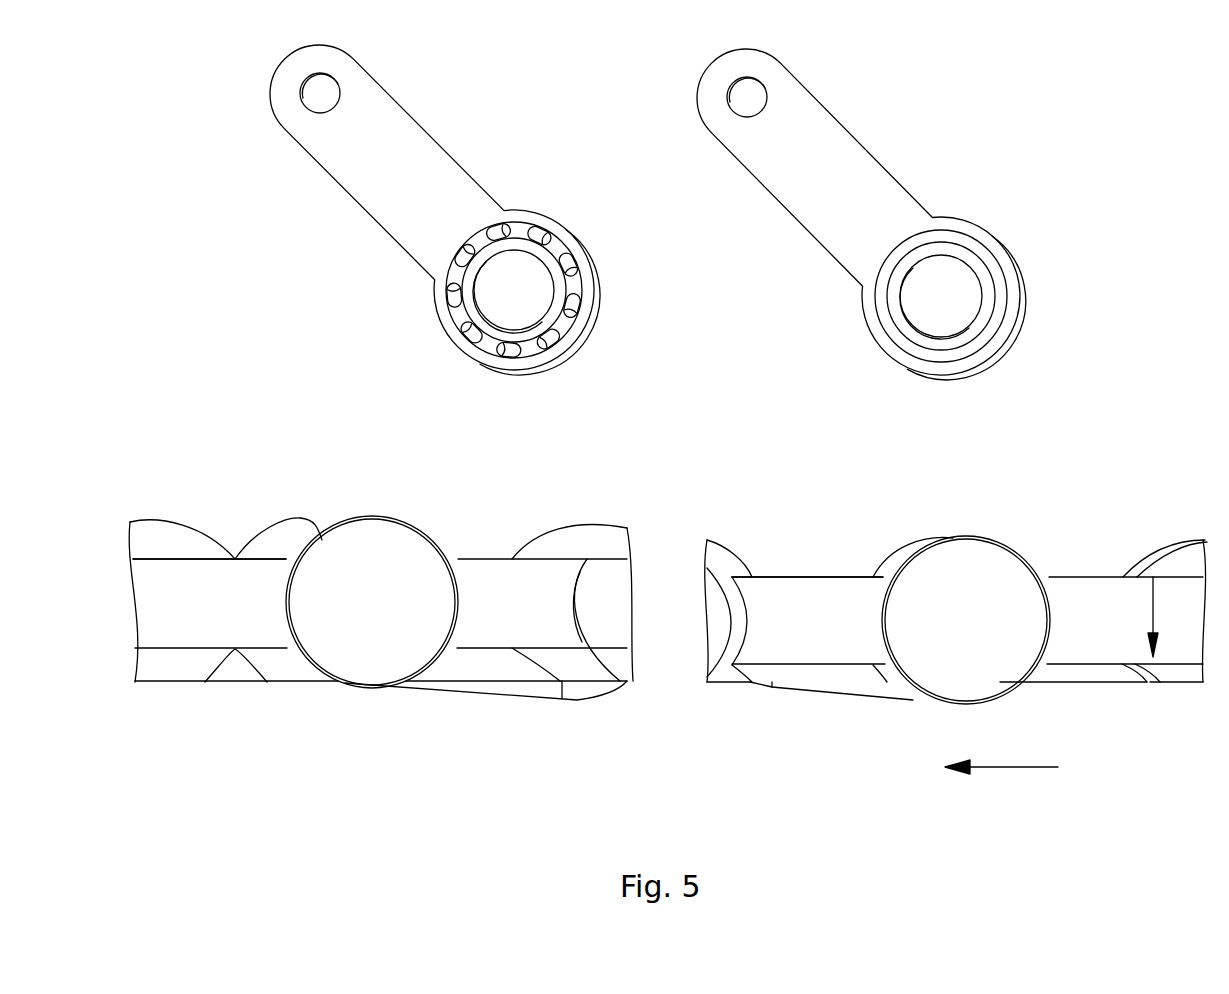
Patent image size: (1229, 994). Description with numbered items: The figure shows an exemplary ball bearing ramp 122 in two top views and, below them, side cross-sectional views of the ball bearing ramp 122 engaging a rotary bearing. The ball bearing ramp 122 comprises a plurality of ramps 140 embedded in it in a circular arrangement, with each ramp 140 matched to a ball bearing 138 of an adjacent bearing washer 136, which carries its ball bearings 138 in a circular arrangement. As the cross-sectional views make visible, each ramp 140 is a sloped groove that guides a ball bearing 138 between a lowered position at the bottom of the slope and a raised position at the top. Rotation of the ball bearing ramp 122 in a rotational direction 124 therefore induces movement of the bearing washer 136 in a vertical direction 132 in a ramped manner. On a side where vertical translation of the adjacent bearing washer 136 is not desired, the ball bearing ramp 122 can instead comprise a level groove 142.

The ball bearing ramp 122 is at (382, 166).
The rotational direction 124 is at (1000, 767).
The vertical direction 132 is at (1153, 605).
The bearing washer 136 is at (218, 585).
The ball bearing 138 is at (370, 607).
The ramp 140 is at (460, 327).
The level groove 142 is at (890, 327).